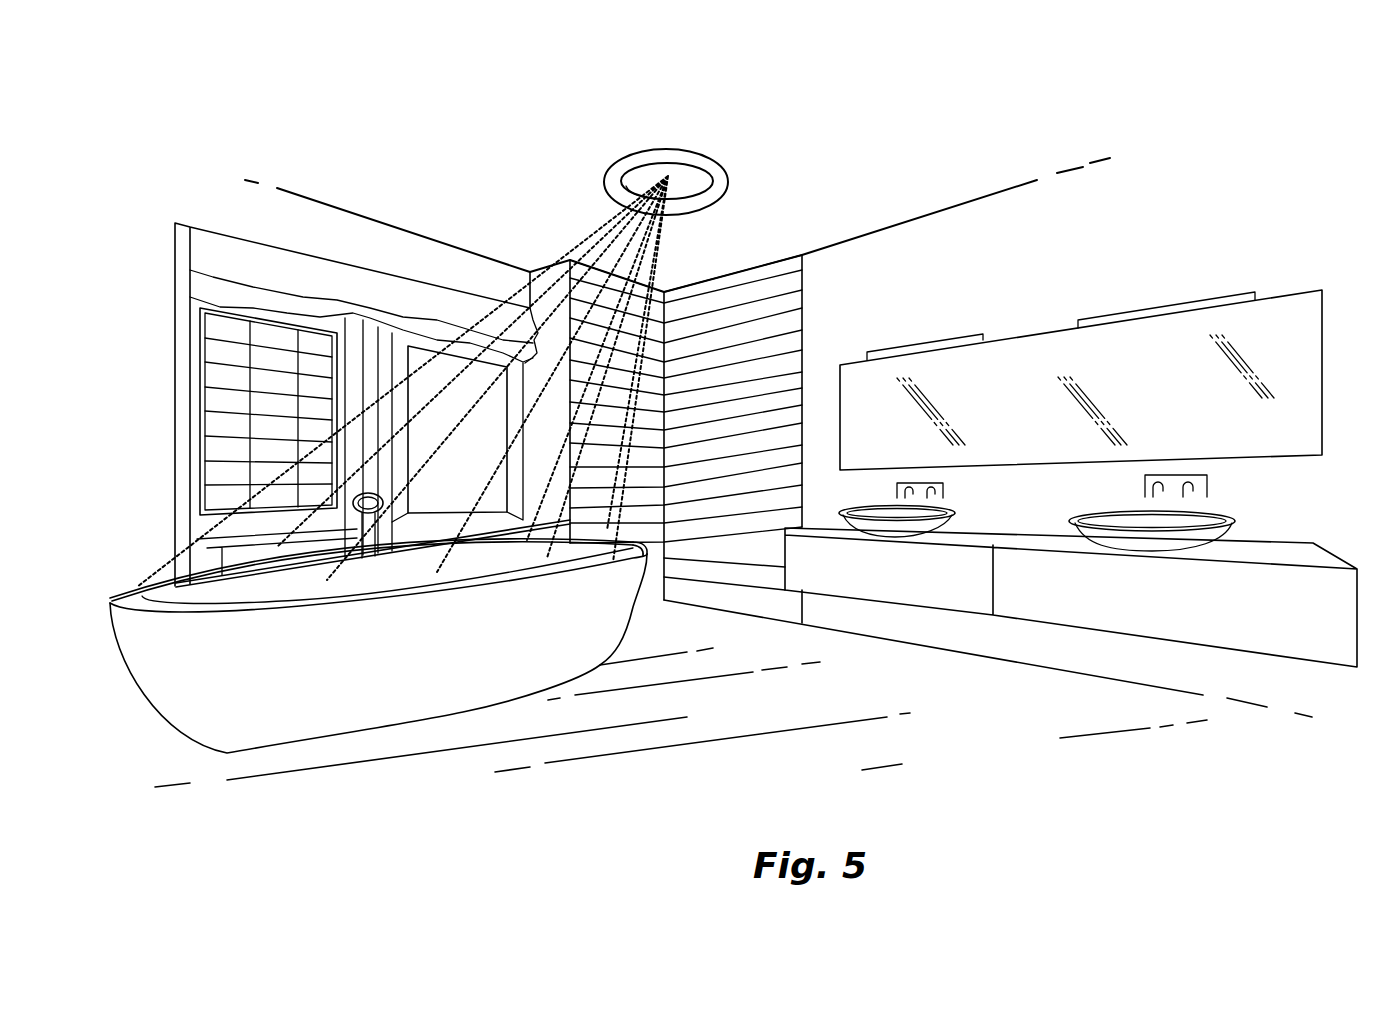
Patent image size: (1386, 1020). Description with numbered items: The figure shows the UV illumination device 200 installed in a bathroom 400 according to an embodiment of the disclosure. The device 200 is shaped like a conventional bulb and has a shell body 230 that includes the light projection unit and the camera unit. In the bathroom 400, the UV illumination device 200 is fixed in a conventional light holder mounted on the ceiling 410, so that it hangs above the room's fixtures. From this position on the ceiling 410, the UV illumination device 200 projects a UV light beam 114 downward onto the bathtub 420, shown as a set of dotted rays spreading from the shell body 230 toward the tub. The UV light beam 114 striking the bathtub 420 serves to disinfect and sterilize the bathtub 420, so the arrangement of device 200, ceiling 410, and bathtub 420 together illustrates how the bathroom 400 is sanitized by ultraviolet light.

The bathroom 400 is at (294, 147).
The UV illumination device 200 is at (506, 346).
The shell body 230 is at (728, 177).
The UV light beam 114 is at (463, 397).
The ceiling 410 is at (928, 113).
The bathtub 420 is at (432, 695).